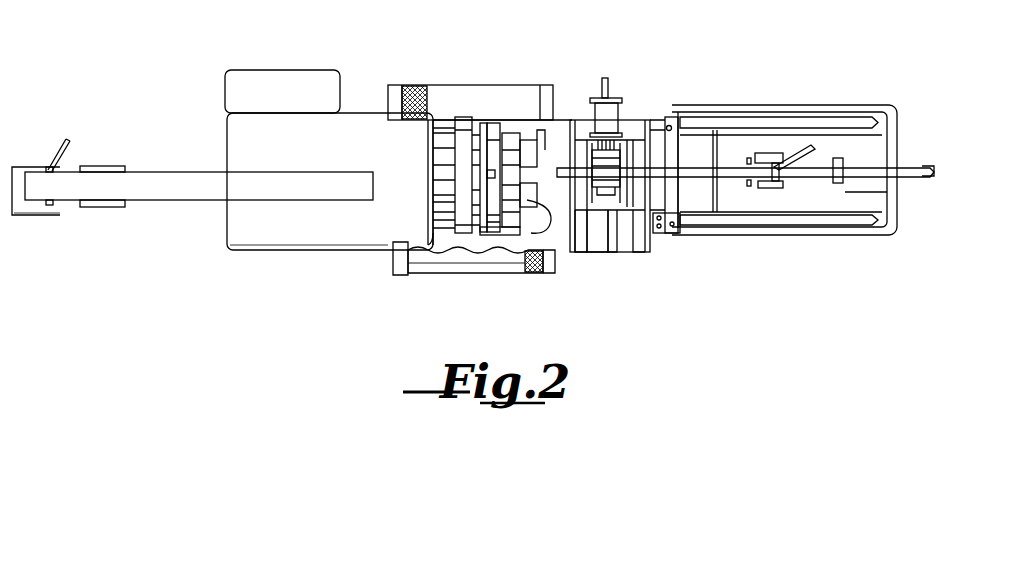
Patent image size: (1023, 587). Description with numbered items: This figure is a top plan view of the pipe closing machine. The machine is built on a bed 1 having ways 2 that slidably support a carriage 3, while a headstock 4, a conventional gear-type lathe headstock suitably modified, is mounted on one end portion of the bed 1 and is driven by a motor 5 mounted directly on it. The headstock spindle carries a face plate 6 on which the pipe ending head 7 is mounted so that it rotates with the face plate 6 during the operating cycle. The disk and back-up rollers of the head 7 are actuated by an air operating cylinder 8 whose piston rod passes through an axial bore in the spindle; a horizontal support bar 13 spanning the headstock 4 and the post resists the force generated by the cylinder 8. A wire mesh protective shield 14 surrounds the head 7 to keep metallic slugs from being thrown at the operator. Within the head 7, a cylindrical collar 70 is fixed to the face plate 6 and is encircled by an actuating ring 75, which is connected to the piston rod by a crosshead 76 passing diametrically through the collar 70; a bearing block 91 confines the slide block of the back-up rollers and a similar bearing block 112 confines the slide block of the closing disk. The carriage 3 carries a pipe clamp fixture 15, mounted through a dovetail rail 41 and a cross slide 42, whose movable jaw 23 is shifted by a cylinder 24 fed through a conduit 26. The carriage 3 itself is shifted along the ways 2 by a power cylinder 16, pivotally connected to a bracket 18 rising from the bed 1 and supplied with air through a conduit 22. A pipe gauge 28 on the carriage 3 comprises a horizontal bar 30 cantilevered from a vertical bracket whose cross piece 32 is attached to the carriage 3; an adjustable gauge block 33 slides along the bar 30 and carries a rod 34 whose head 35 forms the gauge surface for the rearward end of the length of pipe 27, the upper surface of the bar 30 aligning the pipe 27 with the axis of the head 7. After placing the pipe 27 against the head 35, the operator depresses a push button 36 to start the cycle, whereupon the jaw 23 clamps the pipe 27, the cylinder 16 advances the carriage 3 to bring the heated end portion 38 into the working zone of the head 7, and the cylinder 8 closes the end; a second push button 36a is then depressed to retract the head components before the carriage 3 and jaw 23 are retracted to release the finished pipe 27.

The bed 1 is at (905, 217).
The ways 2 is at (860, 108).
The carriage 3 is at (607, 260).
The headstock 4 is at (355, 226).
The motor 5 is at (310, 80).
The face plate 6 is at (459, 125).
The pipe ending head 7 is at (497, 236).
The operating cylinder 8 is at (100, 160).
The horizontal support bar 13 is at (203, 180).
The protective shield 14 is at (497, 90).
The pipe clamp fixture 15 is at (618, 238).
The power cylinder 16 is at (720, 125).
The bracket 18 is at (775, 188).
The conduit 22 is at (805, 145).
The movable jaw 23 is at (600, 150).
The cylinder 24 is at (615, 105).
The conduit 26 is at (606, 85).
The length of pipe 27 is at (728, 235).
The pipe gauge 28 is at (936, 156).
The horizontal bar 30 is at (912, 165).
The cross piece 32 is at (675, 125).
The adjustable gauge block 33 is at (887, 192).
The rod 34 is at (838, 158).
The head 35 is at (770, 150).
The push button 36 is at (662, 235).
The second push button 36a is at (642, 252).
The heated end portion 38 is at (541, 181).
The dovetail rail 41 is at (597, 252).
The cross slide 42 is at (578, 252).
The cylindrical collar 70 is at (483, 123).
The actuating ring 75 is at (494, 135).
The crosshead 76 is at (487, 174).
The bearing block 91 is at (515, 140).
The bearing block 112 is at (523, 275).